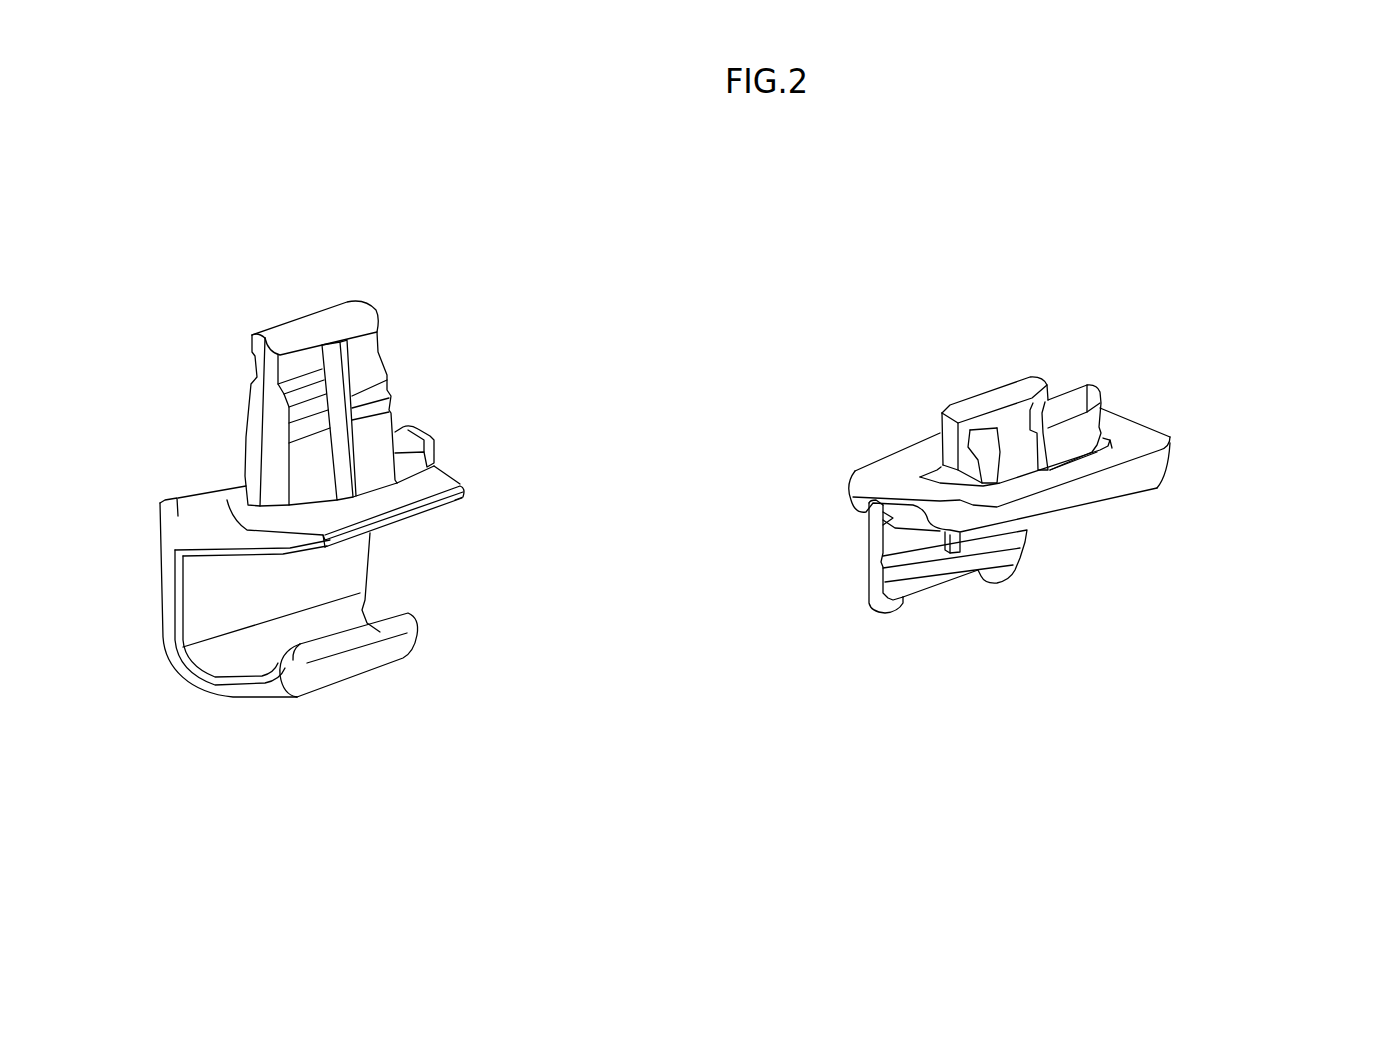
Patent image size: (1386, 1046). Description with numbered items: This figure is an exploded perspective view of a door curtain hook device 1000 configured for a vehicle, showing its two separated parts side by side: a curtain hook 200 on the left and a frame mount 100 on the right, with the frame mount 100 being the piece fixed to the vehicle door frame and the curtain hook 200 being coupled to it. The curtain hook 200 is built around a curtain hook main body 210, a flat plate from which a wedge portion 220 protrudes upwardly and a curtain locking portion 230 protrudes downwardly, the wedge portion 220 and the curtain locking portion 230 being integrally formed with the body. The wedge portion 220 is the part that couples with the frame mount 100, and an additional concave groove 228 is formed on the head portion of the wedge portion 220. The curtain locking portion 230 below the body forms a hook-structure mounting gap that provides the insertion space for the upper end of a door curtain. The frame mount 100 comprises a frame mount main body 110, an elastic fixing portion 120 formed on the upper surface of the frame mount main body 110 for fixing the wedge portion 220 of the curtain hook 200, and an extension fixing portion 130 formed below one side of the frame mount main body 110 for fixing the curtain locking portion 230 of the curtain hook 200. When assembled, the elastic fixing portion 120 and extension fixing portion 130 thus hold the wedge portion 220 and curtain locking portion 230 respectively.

The door curtain hook device 1000 is at (1315, 725).
The curtain hook 200 is at (615, 373).
The concave groove 228 is at (363, 342).
The wedge portion 220 is at (388, 390).
The curtain hook main body 210 is at (462, 490).
The curtain locking portion 230 is at (372, 560).
The frame mount 100 is at (1305, 407).
The elastic fixing portion 120 is at (1103, 392).
The frame mount main body 110 is at (1153, 469).
The extension fixing portion 130 is at (1018, 566).